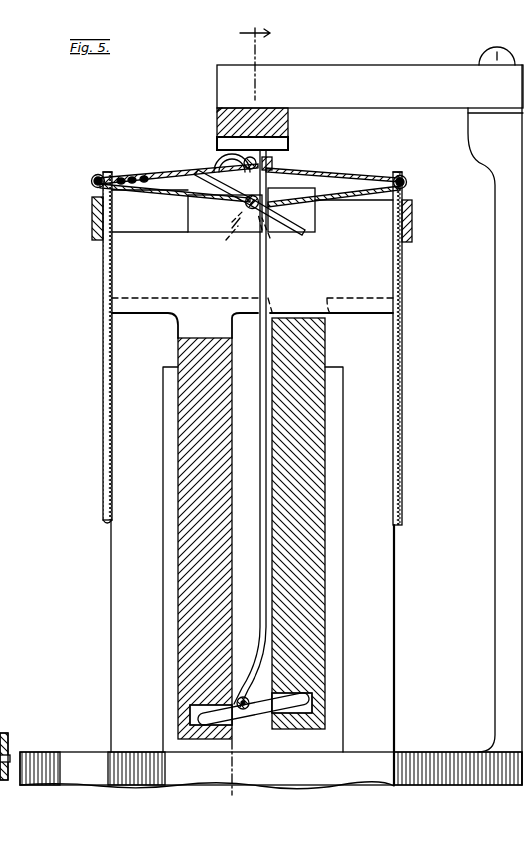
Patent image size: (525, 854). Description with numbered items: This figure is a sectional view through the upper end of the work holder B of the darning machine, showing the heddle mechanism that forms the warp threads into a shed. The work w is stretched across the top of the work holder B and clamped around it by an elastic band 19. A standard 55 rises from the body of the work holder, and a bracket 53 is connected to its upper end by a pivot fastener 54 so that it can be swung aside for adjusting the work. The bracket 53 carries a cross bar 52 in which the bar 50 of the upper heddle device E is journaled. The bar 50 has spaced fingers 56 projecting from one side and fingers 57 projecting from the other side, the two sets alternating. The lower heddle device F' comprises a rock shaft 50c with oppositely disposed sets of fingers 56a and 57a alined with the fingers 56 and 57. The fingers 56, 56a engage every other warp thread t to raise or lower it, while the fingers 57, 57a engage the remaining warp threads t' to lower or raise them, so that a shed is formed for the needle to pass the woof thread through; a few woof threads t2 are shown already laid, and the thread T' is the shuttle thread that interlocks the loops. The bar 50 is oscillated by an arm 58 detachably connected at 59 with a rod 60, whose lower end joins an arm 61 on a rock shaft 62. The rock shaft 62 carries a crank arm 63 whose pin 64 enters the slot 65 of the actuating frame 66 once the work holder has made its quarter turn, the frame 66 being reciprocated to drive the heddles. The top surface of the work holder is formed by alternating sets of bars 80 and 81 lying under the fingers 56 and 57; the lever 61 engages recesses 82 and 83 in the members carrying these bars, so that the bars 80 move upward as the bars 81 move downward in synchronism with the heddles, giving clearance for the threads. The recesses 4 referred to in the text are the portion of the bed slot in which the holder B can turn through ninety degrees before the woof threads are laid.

The recesses 4 is at (255, 55).
The elastic band 19 is at (96, 244).
The bar 50 is at (252, 145).
The rock shaft 50c is at (252, 210).
The cross bar 52 is at (212, 106).
The bracket 53 is at (370, 89).
The pivot fastener 54 is at (484, 62).
The standard 55 is at (496, 268).
The spaced fingers 56 is at (226, 166).
The fingers 56a is at (181, 201).
The spaced fingers 57 is at (290, 180).
The fingers 57a is at (281, 225).
The arm 58 is at (258, 158).
The detachable connection 59 is at (273, 166).
The rod 60 is at (267, 298).
The arm 61 is at (262, 710).
The rock shaft 62 is at (244, 700).
The crank arm 63 is at (8, 743).
The crank pin 64 is at (325, 642).
The slot 65 is at (178, 642).
The actuating frame 66 is at (10, 765).
The bars 80 is at (365, 316).
The bars 81 is at (158, 316).
The recess 82 is at (312, 702).
The recess 83 is at (190, 718).
The work holder B is at (112, 586).
The upper heddle device E is at (216, 122).
The lower heddle device F' is at (222, 241).
The shuttle thread T' is at (130, 202).
The warp threads t is at (373, 171).
The warp threads t' is at (334, 209).
The woof threads t2 is at (128, 178).
The work w is at (104, 318).